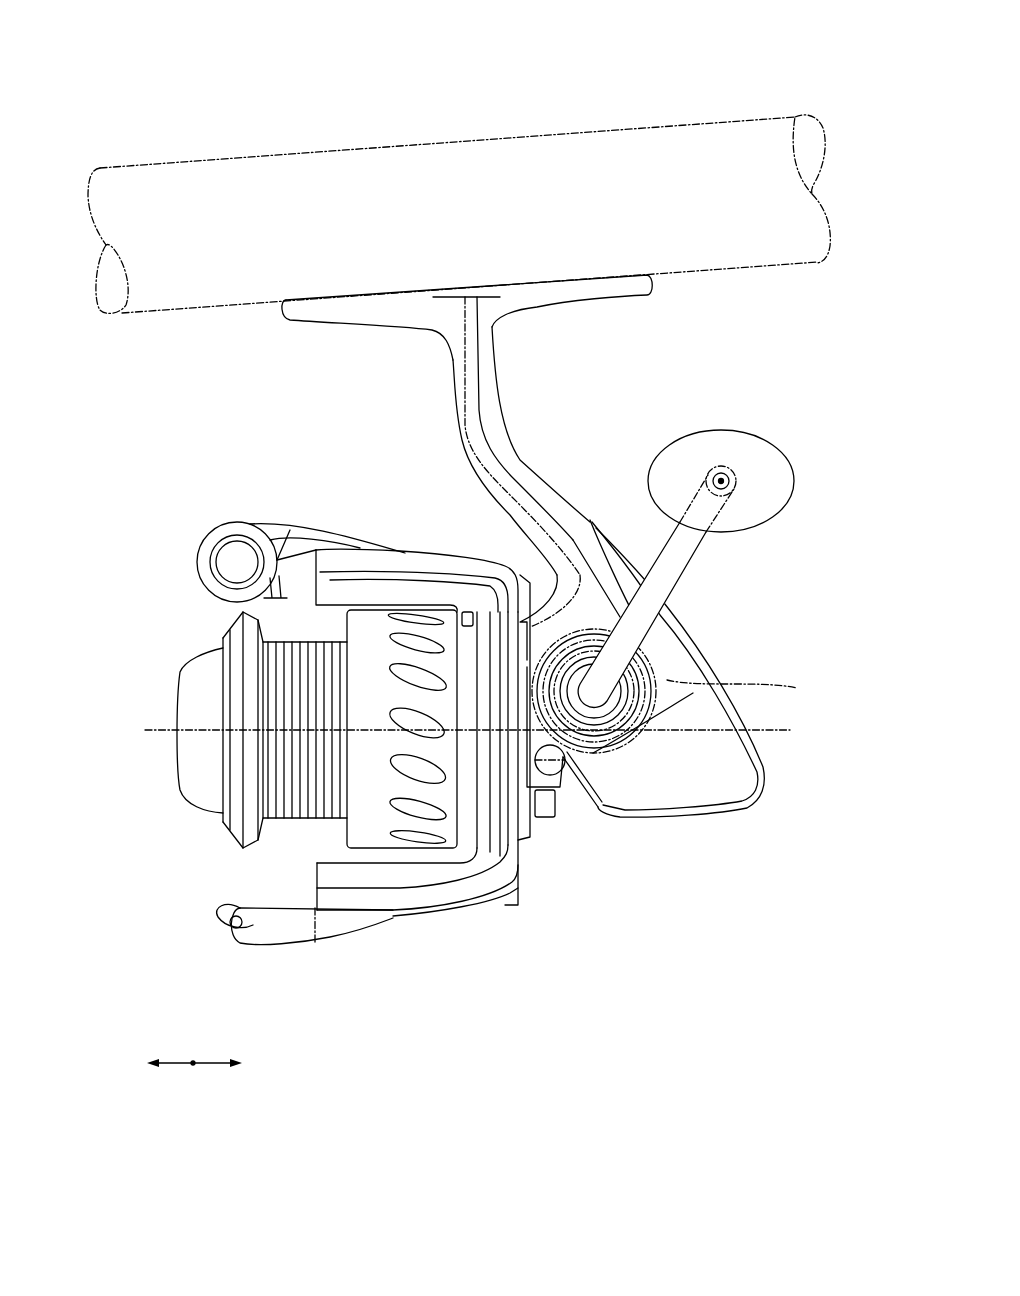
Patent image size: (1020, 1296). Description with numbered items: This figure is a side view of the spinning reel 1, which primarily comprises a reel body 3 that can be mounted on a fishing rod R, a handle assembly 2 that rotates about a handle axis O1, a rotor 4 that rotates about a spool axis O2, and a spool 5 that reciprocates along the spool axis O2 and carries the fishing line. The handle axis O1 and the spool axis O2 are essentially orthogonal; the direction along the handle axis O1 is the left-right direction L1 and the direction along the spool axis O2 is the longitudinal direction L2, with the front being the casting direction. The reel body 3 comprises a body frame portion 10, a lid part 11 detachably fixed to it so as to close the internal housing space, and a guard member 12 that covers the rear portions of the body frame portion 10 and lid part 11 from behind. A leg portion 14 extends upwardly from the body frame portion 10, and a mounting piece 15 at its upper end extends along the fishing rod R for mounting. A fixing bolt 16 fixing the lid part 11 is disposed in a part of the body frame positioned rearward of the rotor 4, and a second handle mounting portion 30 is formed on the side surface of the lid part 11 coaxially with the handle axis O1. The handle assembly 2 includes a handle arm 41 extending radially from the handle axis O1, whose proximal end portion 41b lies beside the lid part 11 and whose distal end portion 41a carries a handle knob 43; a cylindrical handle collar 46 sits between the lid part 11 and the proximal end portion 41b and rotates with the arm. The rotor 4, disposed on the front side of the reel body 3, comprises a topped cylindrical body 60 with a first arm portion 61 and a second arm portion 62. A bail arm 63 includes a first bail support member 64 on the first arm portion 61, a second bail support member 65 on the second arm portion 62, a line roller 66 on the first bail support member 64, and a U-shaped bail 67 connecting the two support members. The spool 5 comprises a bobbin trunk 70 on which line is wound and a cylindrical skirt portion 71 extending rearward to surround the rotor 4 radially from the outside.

The spinning reel 1 is at (212, 398).
The handle assembly 2 is at (701, 516).
The reel body 3 is at (490, 571).
The rotor 4 is at (417, 718).
The spool 5 is at (301, 787).
The body frame portion 10 is at (577, 510).
The lid part 11 is at (575, 758).
The guard member 12 is at (713, 672).
The leg portion 14 is at (492, 378).
The mounting piece 15 is at (615, 290).
The fixing bolt 16 is at (553, 768).
The second handle mounting portion 30 is at (751, 683).
The handle arm 41 is at (672, 572).
The distal end portion 41a is at (722, 472).
The proximal end portion 41b is at (597, 700).
The handle knob 43 is at (760, 513).
The handle collar 46 is at (617, 703).
The cylindrical body 60 is at (465, 628).
The first arm portion 61 is at (408, 580).
The second arm portion 62 is at (413, 890).
The bail arm 63 is at (232, 518).
The first bail support member 64 is at (290, 530).
The second bail support member 65 is at (300, 935).
The line roller 66 is at (222, 561).
The bail 67 is at (280, 590).
The bobbin trunk 70 is at (300, 818).
The skirt portion 71 is at (378, 842).
The fishing rod R is at (718, 117).
The handle axis O1 is at (630, 653).
The spool axis O2 is at (777, 733).
The left-right direction L1 is at (195, 1068).
The longitudinal direction L2 is at (181, 1068).